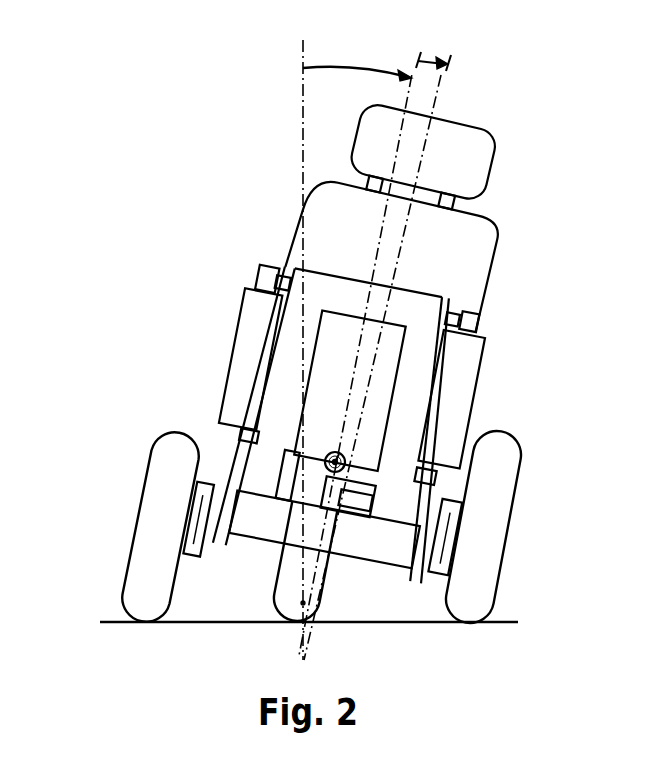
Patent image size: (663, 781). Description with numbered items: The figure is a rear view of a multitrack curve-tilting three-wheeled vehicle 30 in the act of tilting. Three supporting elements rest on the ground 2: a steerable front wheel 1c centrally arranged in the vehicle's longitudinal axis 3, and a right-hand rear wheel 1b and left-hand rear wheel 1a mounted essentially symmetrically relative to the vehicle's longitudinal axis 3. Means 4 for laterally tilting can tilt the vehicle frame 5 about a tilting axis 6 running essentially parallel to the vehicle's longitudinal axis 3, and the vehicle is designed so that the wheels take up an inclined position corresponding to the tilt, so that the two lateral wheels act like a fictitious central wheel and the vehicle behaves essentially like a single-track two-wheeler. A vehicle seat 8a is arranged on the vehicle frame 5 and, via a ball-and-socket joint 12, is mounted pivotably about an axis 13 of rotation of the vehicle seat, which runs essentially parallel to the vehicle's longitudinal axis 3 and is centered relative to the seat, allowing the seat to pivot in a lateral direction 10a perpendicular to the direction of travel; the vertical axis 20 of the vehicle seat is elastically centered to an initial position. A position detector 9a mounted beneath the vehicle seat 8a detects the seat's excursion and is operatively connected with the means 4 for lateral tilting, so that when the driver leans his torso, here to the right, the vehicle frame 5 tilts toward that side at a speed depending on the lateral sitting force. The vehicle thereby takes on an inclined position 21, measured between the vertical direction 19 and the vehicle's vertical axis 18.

The left-hand rear wheel 1a is at (160, 505).
The right-hand rear wheel 1b is at (480, 548).
The front wheel 1c is at (293, 571).
The ground 2 is at (100, 621).
The vehicle's longitudinal axis 3 is at (320, 528).
The means for laterally tilting 4 is at (252, 340).
The vehicle frame 5 is at (392, 547).
The tilting axis 6 is at (303, 603).
The vehicle seat 8a is at (465, 253).
The position detector 9a is at (355, 497).
The lateral direction 10a is at (425, 60).
The ball-and-socket joint 12 is at (327, 455).
The axis of rotation of the vehicle seat 13 is at (325, 461).
The vehicle's vertical axis 18 is at (408, 107).
The vertical direction 19 is at (302, 98).
The vertical axis of the vehicle seat 20 is at (420, 170).
The inclined position 21 is at (382, 72).
The three-wheeled vehicle 30 is at (141, 151).